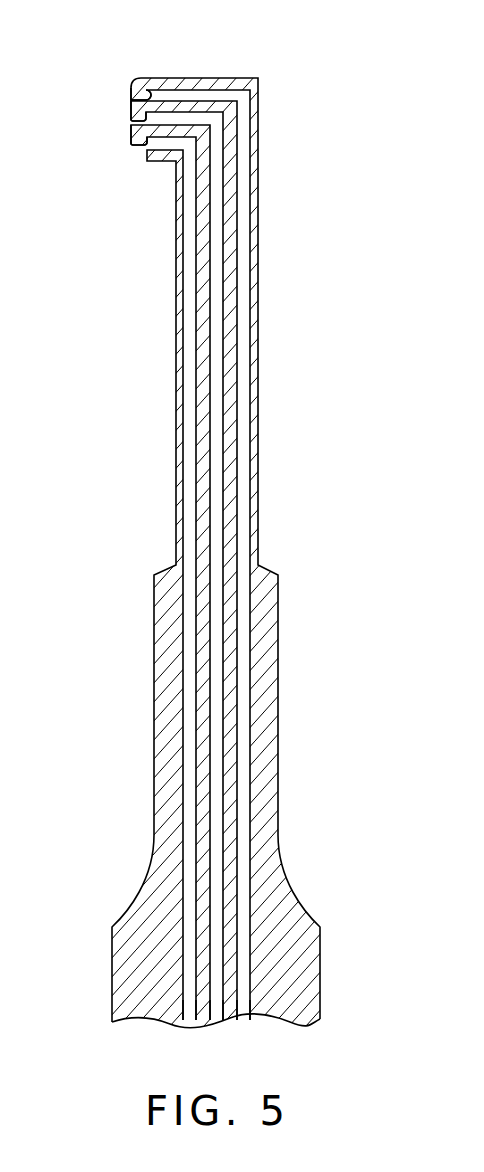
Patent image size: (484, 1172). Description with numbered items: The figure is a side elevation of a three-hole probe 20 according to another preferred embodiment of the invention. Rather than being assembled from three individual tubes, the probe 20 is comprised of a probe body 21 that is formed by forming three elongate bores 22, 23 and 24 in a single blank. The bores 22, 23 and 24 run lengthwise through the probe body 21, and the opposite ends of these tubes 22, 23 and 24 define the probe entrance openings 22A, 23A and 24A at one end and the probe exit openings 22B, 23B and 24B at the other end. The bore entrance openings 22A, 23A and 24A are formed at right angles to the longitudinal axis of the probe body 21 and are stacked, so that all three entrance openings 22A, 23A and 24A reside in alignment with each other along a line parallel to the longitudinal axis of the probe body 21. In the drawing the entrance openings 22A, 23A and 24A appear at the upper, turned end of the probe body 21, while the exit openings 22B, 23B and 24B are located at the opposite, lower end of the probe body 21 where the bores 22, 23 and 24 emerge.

The probe 20 is at (290, 75).
The probe body 21 is at (176, 384).
The elongate bore 22 is at (215, 95).
The probe entrance opening 22A is at (141, 94).
The probe exit opening 22B is at (243, 1022).
The elongate bore 23 is at (213, 123).
The probe entrance opening 23A is at (143, 121).
The probe exit opening 23B is at (218, 1020).
The elongate bore 24 is at (178, 149).
The probe entrance opening 24A is at (150, 144).
The probe exit opening 24B is at (188, 1025).